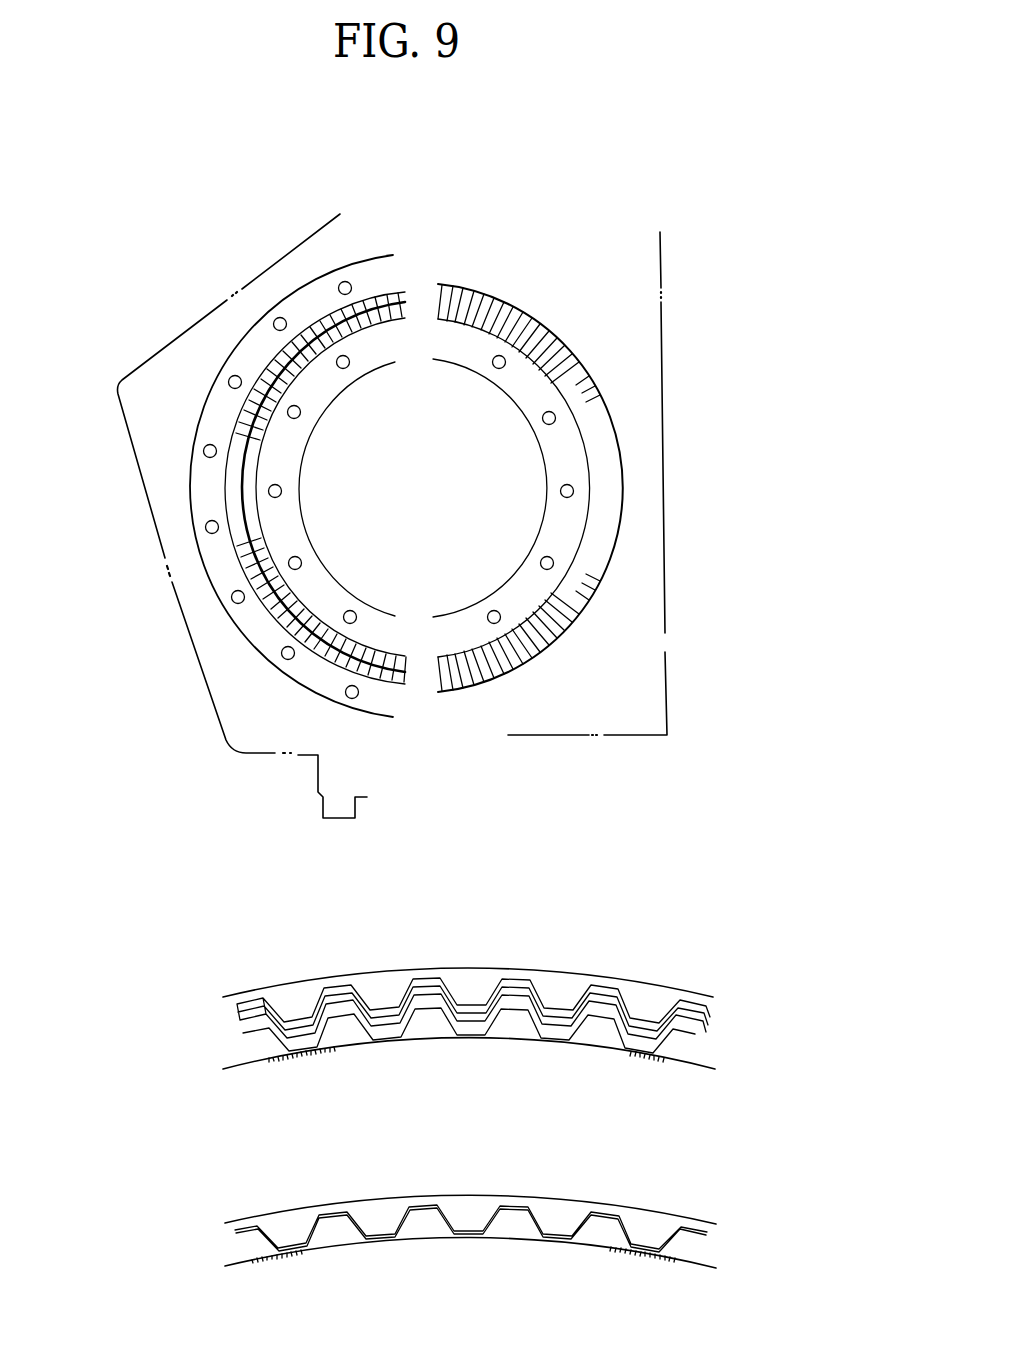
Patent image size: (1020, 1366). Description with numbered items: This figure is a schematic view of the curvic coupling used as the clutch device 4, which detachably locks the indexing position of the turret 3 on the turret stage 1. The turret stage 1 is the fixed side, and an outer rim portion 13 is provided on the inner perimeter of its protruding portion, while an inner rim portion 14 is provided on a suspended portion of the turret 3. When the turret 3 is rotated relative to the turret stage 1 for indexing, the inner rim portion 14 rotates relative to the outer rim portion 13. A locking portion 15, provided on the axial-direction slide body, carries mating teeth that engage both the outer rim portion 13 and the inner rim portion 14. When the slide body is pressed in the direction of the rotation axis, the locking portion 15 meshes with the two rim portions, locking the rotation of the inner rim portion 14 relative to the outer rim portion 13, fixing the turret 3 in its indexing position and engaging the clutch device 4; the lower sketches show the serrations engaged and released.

The turret stage 1 is at (663, 343).
The turret 3 is at (252, 278).
The clutch device 4 is at (142, 282).
The outer rim portion 13 is at (237, 415).
The inner rim portion 14 is at (287, 593).
The locking portion 15 is at (575, 622).